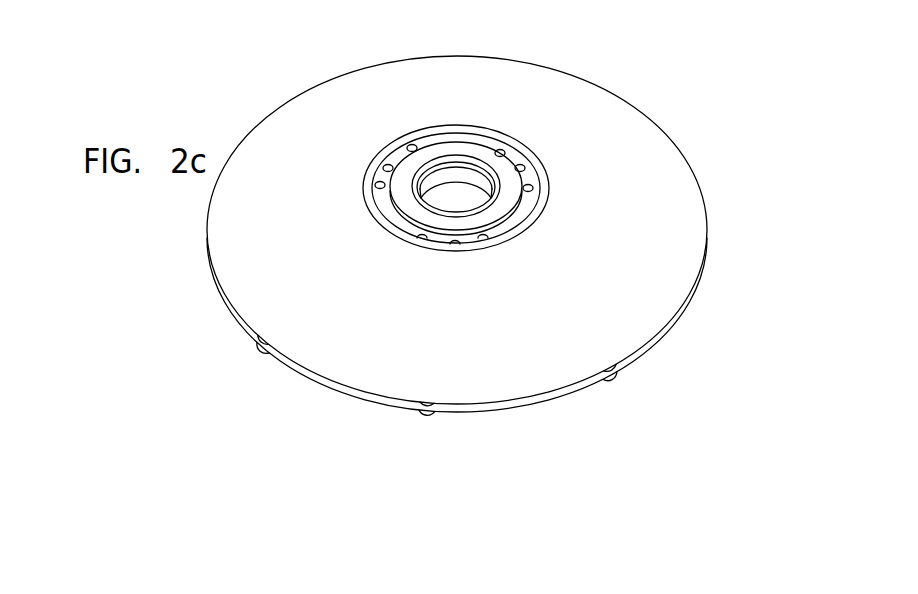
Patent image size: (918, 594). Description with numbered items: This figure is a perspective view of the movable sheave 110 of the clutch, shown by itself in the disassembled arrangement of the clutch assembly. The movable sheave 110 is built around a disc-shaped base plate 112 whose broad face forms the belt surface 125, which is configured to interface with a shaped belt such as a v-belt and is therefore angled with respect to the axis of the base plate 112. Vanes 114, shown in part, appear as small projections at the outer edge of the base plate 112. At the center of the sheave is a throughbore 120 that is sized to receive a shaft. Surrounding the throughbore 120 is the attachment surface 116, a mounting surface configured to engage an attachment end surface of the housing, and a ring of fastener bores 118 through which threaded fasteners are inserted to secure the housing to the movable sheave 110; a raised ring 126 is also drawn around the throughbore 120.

The movable sheave 110 is at (638, 85).
The base plate 112 is at (707, 220).
The vanes 114 is at (427, 412).
The attachment surface 116 is at (393, 222).
The fastener bores 118 is at (392, 167).
The throughbore 120 is at (476, 175).
The belt surface 125 is at (610, 282).
The raised boss ring 126 is at (504, 207).